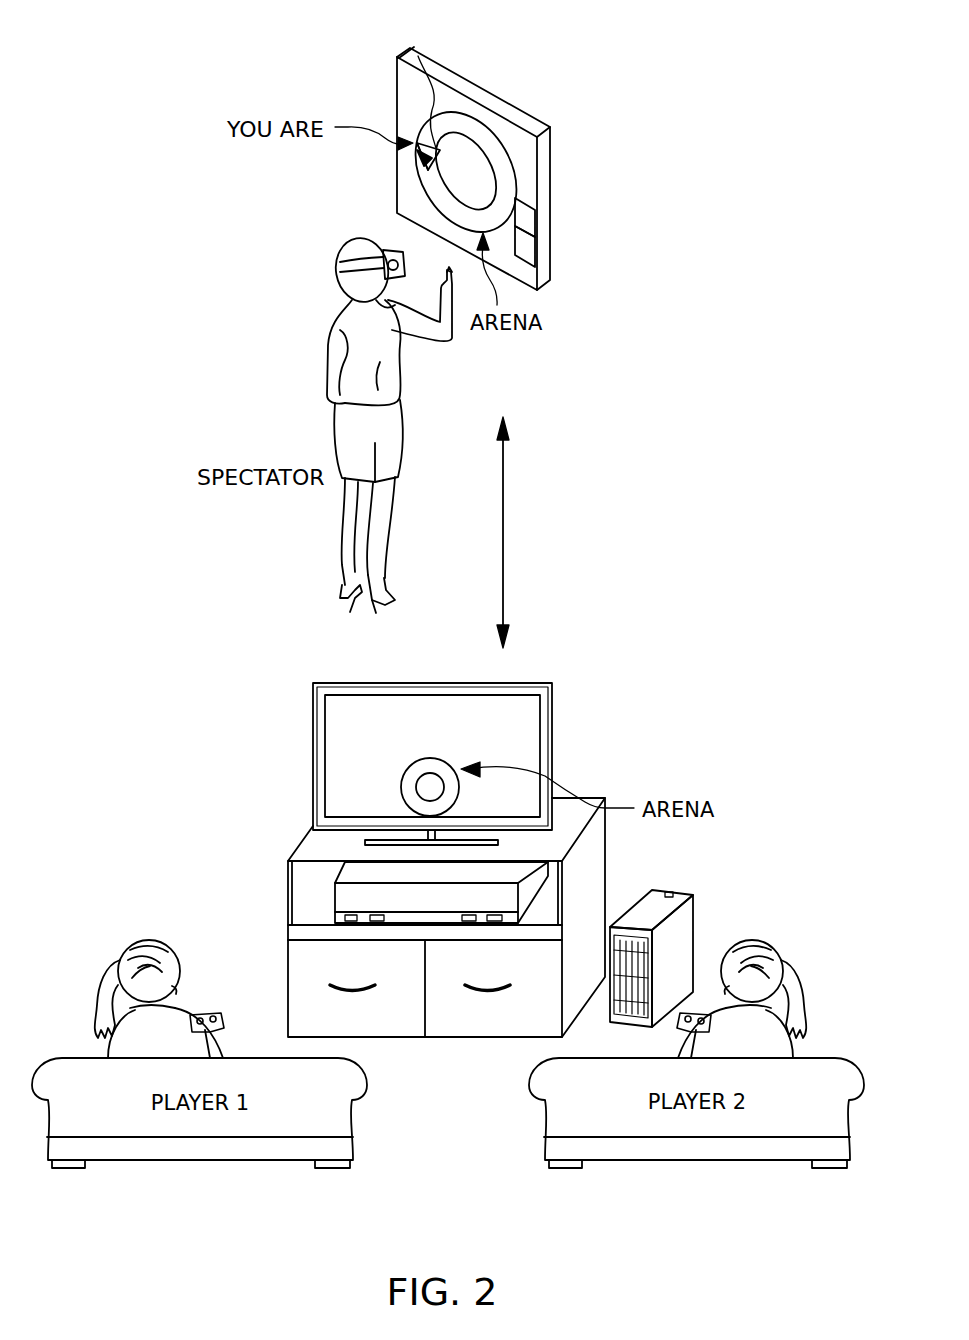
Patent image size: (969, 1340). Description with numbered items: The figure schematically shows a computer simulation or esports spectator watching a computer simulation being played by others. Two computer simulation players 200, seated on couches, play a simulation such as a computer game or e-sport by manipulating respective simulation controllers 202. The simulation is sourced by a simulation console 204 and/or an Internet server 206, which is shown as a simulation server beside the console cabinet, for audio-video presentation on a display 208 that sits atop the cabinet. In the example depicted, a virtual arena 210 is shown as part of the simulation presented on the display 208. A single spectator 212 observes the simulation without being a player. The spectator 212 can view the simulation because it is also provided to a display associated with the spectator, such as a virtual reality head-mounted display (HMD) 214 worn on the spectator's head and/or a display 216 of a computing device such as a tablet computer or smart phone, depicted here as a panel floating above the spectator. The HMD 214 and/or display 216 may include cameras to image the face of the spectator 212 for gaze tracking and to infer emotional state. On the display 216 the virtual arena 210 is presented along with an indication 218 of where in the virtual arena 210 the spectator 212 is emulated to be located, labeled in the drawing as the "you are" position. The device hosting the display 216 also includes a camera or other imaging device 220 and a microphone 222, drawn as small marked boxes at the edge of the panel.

The computer simulation players 200 is at (108, 1050).
The simulation controllers 202 is at (197, 1013).
The simulation console 204 is at (345, 900).
The Internet server 206 is at (670, 892).
The display 208 is at (535, 701).
The virtual arena 210 is at (500, 170).
The spectator 212 is at (330, 342).
The virtual reality head-mounted display (HMD) 214 is at (372, 240).
The display of a computing device 216 is at (542, 126).
The indication 218 is at (402, 55).
The camera or other imaging device 220 is at (533, 228).
The microphone 222 is at (533, 262).